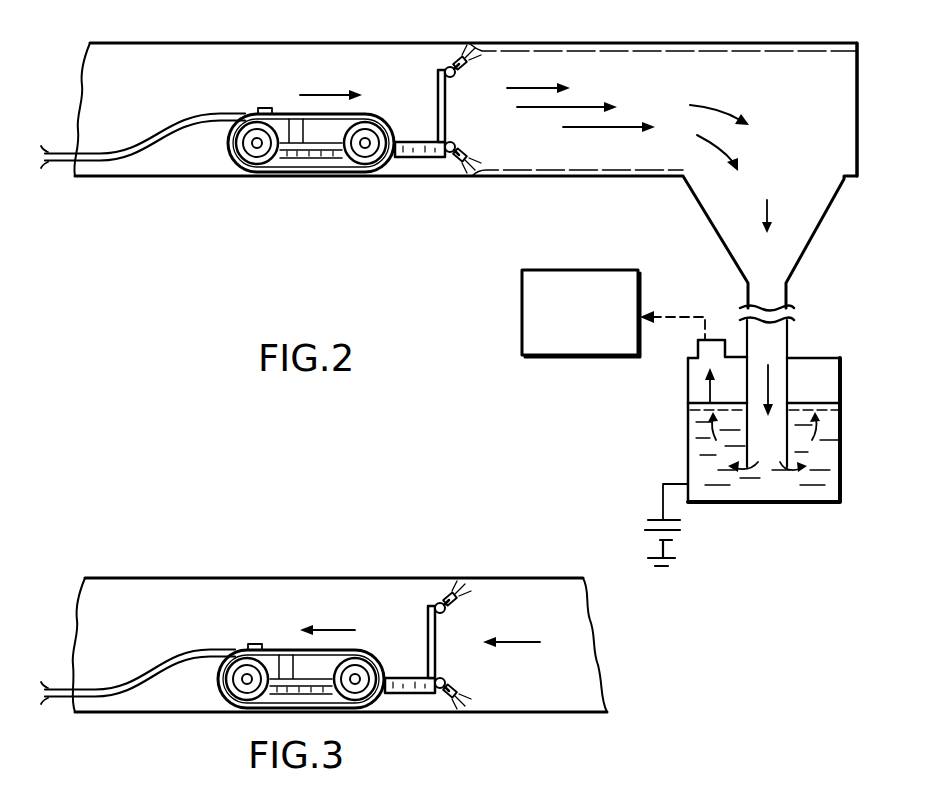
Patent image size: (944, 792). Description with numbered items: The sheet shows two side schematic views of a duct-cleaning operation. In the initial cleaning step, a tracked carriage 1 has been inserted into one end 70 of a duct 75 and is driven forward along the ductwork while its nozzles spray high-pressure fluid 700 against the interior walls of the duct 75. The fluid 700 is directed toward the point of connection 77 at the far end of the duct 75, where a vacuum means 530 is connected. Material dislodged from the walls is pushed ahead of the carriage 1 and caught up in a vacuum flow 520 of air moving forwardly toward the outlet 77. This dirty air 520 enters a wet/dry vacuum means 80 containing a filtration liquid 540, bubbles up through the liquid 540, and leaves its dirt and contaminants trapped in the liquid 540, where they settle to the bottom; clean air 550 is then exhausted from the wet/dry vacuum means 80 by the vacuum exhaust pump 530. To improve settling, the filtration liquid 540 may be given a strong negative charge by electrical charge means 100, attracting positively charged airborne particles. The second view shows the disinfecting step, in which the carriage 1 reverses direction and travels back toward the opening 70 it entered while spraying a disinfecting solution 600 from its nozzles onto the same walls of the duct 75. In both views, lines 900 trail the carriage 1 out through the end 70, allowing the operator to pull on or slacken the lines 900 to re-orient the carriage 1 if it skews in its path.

In FIG. 2, the carriage 1 is at (261, 99).
In FIG. 3, the carriage 1 is at (215, 630).
In FIG. 3, the duct end 70 is at (113, 595).
In FIG. 2, the duct 75 is at (352, 44).
In FIG. 3, the duct 75 is at (247, 578).
In FIG. 2, the point of connection 77 is at (804, 122).
In FIG. 2, the wet/dry vacuum means 80 is at (824, 346).
In FIG. 2, the electrical charge means 100 is at (652, 520).
In FIG. 2, the vacuum flow 520 is at (722, 106).
In FIG. 2, the vacuum means 530 is at (565, 357).
In FIG. 2, the filtration liquid 540 is at (688, 461).
In FIG. 2, the clean air 550 is at (668, 314).
In FIG. 3, the disinfecting solution 600 is at (470, 589).
In FIG. 2, the fluid 700 is at (496, 48).
In FIG. 2, the lines 900 is at (147, 143).
In FIG. 3, the lines 900 is at (125, 678).